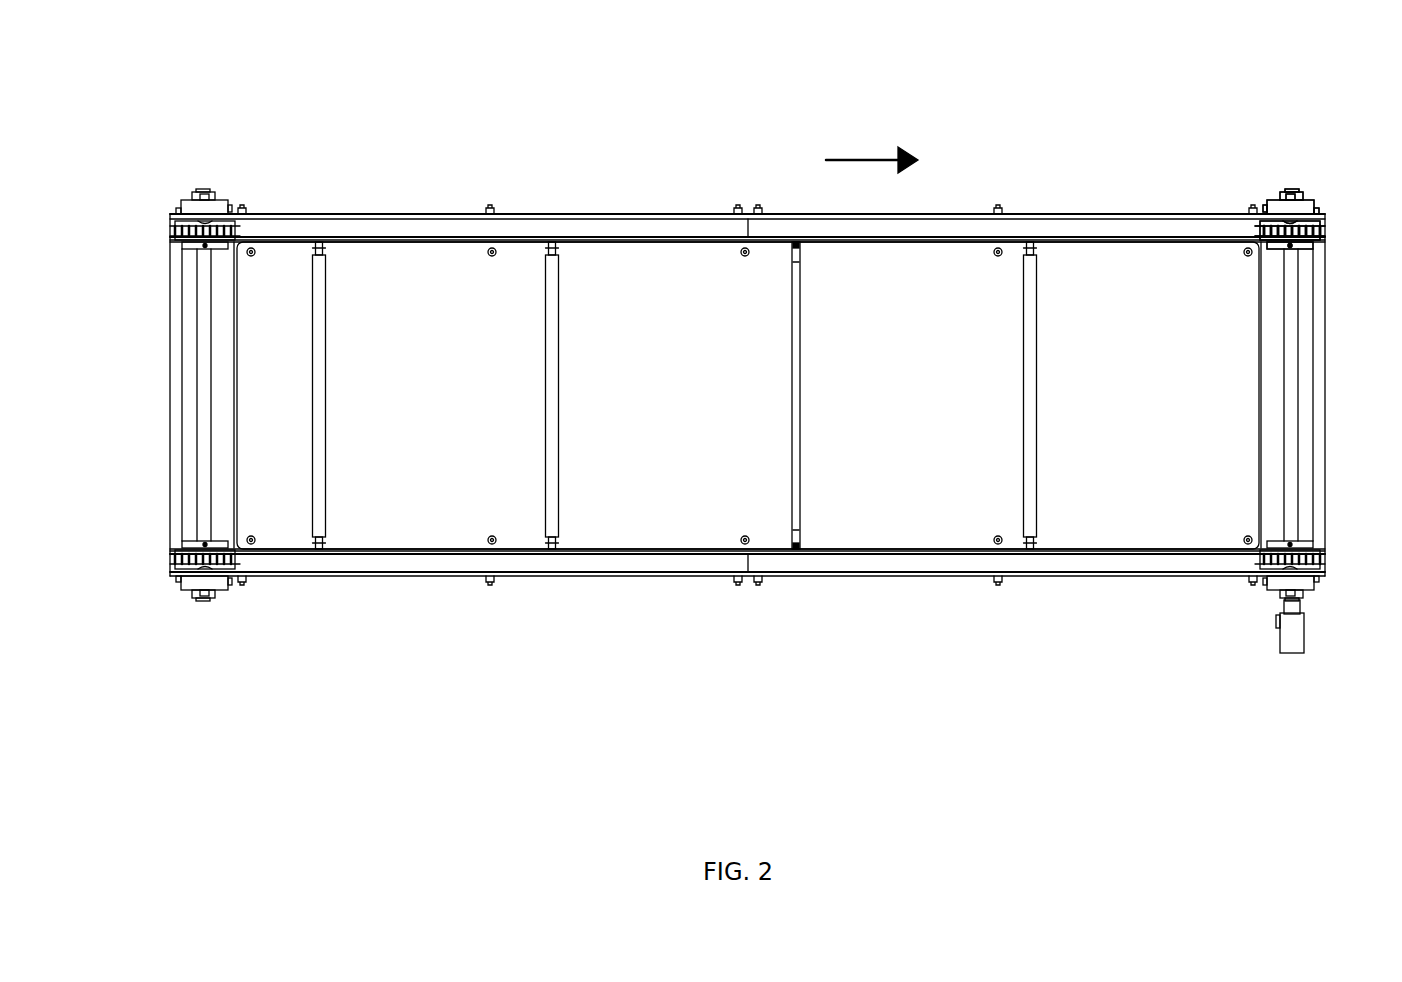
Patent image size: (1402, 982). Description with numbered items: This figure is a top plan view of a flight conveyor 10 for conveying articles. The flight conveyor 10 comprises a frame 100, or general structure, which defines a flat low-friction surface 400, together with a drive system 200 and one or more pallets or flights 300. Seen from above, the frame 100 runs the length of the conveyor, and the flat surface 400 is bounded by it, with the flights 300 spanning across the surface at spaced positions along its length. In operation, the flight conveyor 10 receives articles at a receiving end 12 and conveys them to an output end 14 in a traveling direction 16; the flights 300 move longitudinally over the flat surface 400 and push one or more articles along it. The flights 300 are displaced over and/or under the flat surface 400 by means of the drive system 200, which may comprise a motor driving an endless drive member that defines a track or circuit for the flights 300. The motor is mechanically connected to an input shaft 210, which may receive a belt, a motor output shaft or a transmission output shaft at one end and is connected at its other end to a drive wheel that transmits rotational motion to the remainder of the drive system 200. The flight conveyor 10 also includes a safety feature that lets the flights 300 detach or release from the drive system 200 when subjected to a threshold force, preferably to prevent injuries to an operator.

The flight conveyor 10 is at (455, 118).
The receiving end 12 is at (190, 350).
The output end 14 is at (1310, 430).
The traveling direction 16 is at (872, 144).
The frame 100 is at (722, 574).
The drive system 200 is at (1293, 181).
The input shaft 210 is at (1278, 632).
The flights 300 is at (790, 330).
The flat low-friction surface 400 is at (400, 522).